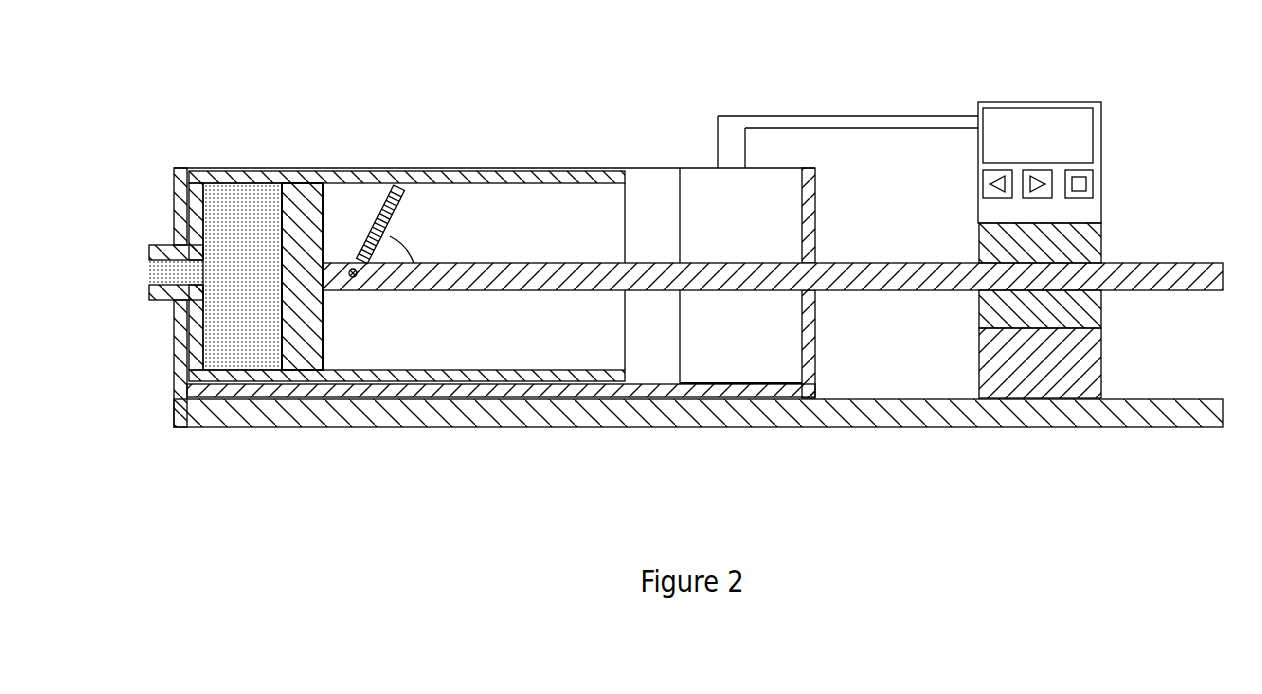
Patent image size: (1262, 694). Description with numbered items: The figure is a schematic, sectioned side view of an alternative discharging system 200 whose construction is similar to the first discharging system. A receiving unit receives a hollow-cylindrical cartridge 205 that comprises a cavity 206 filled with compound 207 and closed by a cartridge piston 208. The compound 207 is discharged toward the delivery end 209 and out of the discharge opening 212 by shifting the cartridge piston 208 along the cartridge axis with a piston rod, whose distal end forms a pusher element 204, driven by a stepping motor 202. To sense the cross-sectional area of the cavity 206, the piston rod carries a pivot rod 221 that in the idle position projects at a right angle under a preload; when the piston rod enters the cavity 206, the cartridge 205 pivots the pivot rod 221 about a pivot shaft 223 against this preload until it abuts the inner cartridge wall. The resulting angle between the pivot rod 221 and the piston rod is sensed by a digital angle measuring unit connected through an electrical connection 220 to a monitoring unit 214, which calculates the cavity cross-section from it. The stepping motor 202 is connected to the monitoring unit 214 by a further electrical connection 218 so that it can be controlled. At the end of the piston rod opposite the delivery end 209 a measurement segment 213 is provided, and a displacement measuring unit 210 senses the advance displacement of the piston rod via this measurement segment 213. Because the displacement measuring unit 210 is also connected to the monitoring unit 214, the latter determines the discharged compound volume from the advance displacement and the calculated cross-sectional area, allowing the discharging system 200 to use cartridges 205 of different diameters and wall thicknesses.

The discharging system 200 is at (147, 113).
The stepping motor 202 is at (727, 177).
The pusher element 204 is at (322, 273).
The cartridge 205 is at (595, 170).
The cavity 206 is at (511, 330).
The compound 207 is at (228, 360).
The cartridge piston 208 is at (307, 315).
The delivery end 209 is at (116, 308).
The displacement measuring unit 210 is at (1057, 315).
The discharge opening 212 is at (182, 308).
The measurement segment 213 is at (1167, 280).
The monitoring unit 214 is at (1055, 100).
The electrical connection 218 is at (947, 114).
The electrical connection 220 is at (403, 237).
The pivot rod 221 is at (403, 186).
The pivot shaft 223 is at (353, 262).